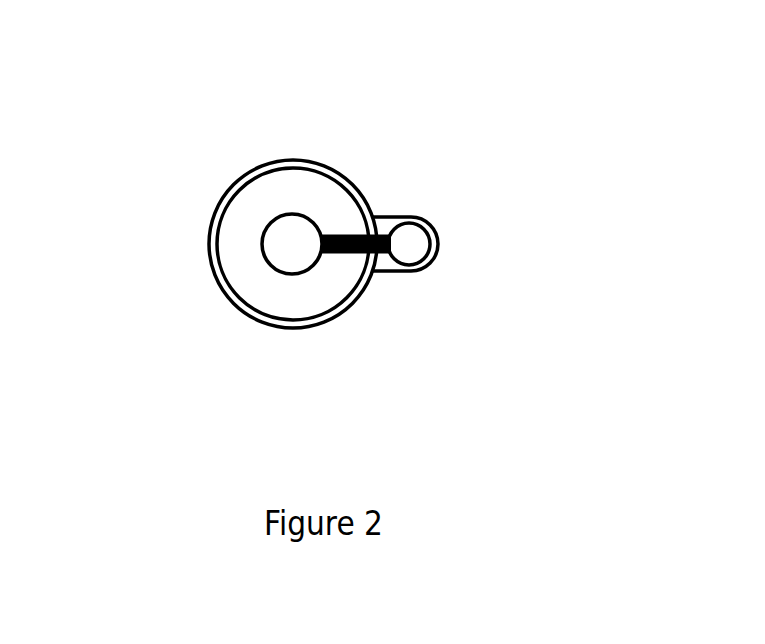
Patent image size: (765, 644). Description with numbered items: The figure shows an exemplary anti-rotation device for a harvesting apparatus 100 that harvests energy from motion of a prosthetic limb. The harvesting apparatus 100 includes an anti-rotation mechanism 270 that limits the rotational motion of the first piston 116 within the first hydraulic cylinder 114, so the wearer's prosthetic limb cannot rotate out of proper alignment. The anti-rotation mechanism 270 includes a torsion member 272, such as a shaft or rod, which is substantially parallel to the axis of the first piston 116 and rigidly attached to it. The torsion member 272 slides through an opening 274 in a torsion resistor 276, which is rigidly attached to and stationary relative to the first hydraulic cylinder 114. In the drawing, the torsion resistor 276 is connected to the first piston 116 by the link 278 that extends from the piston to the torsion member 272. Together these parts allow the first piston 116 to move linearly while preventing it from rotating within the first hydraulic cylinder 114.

The harvesting apparatus 100 is at (172, 97).
The first hydraulic cylinder 114 is at (323, 163).
The first piston 116 is at (337, 178).
The anti-rotation mechanism 270 is at (547, 232).
The torsion member 272 is at (410, 243).
The opening 274 is at (428, 256).
The torsion resistor 276 is at (410, 272).
The connecting bar 278 is at (343, 253).